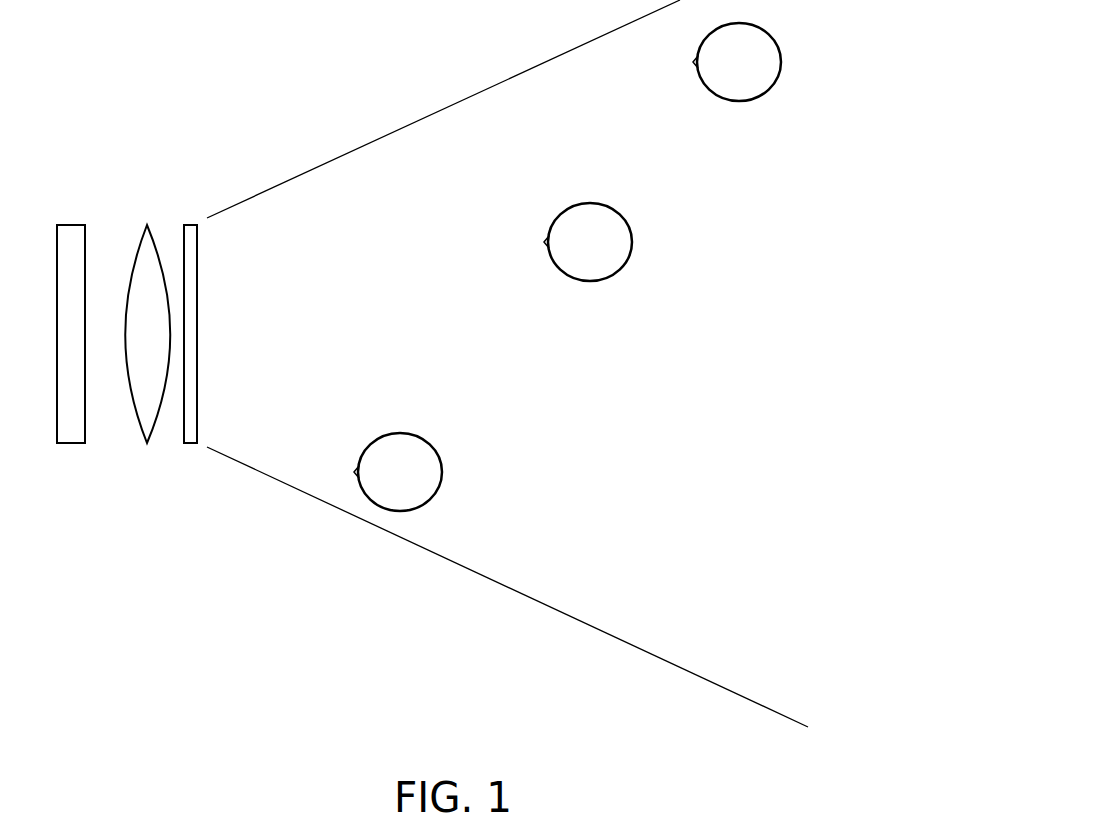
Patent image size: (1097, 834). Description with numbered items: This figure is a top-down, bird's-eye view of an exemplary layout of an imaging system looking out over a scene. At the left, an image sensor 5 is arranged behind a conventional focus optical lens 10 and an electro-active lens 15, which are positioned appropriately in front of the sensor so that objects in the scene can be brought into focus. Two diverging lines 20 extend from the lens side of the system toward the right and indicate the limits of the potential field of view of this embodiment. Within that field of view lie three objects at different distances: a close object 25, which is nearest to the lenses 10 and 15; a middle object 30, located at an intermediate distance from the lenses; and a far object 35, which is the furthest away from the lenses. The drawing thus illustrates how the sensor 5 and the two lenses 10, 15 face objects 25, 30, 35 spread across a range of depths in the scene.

The image sensor 5 is at (71, 225).
The conventional focus optical lens 10 is at (147, 225).
The electro-active lens 15 is at (188, 225).
The lines 20 is at (447, 107).
The close object 25 is at (430, 500).
The middle object 30 is at (622, 268).
The far object 35 is at (768, 90).